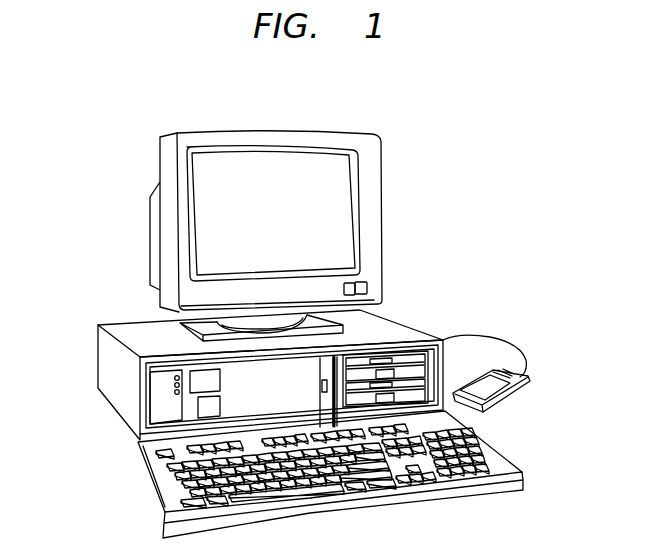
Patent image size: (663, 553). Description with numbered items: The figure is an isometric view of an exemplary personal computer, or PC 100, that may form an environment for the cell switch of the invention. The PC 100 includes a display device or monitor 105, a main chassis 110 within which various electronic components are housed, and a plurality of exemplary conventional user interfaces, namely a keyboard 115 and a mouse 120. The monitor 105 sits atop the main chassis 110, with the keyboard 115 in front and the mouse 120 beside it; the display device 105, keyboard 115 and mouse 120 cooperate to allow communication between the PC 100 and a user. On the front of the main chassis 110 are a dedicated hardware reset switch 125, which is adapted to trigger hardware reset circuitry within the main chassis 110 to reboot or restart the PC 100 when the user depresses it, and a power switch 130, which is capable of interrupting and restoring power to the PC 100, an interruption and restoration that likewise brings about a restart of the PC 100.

The personal computer 100 is at (442, 118).
The display device or monitor 105 is at (168, 142).
The main chassis 110 is at (380, 337).
The keyboard 115 is at (175, 488).
The mouse 120 is at (506, 392).
The hardware reset switch 125 is at (198, 377).
The power switch 130 is at (190, 408).